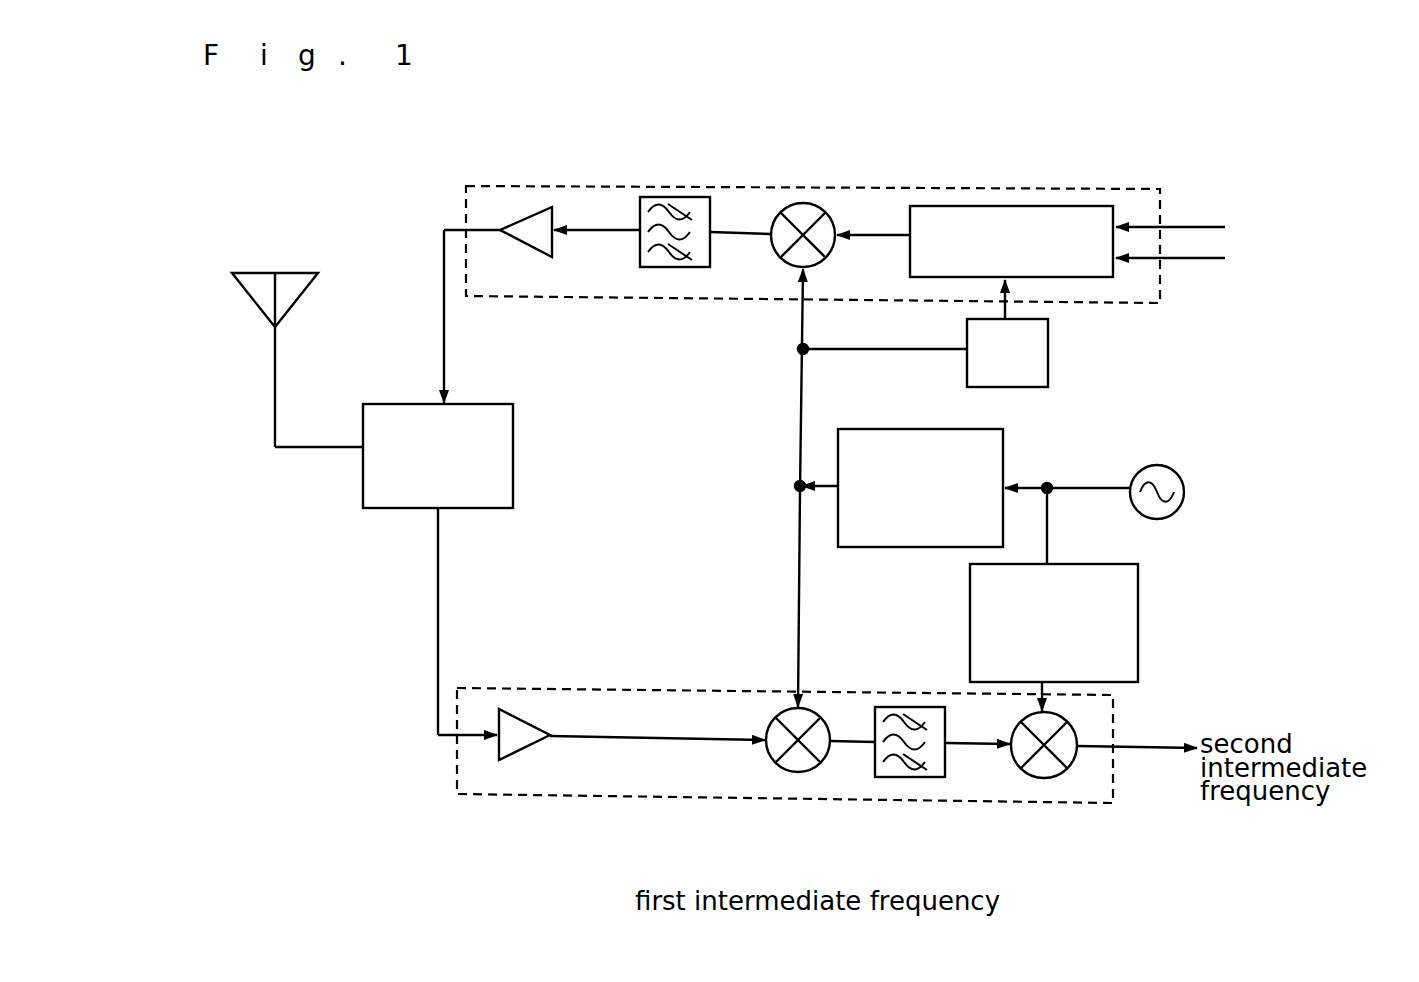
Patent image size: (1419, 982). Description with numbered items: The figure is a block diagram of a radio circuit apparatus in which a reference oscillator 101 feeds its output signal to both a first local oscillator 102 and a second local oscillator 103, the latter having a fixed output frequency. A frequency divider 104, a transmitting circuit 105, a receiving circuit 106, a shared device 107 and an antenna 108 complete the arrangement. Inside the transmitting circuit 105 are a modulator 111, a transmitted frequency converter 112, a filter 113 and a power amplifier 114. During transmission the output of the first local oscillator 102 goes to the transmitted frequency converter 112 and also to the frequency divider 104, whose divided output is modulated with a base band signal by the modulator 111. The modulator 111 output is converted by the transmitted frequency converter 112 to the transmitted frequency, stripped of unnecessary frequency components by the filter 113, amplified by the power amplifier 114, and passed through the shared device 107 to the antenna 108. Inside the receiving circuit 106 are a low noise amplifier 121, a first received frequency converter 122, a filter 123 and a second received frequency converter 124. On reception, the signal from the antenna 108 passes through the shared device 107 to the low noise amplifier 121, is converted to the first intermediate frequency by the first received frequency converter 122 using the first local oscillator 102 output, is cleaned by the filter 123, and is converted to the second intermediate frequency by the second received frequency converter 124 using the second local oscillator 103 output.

The reference oscillator 101 is at (1155, 465).
The first local oscillator 102 is at (860, 547).
The second local oscillator 103 is at (1138, 647).
The frequency divider 104 is at (1012, 387).
The transmitting circuit 105 is at (1160, 189).
The receiving circuit 106 is at (1113, 803).
The shared device 107 is at (490, 404).
The antenna 108 is at (267, 273).
The modulator 111 is at (1005, 206).
The transmitted frequency converter 112 is at (803, 203).
The filter 113 is at (677, 197).
The power amplifier 114 is at (538, 207).
The low noise amplifier 121 is at (515, 760).
The first received frequency converter 122 is at (802, 772).
The filter 123 is at (908, 777).
The second received frequency converter 124 is at (1047, 778).